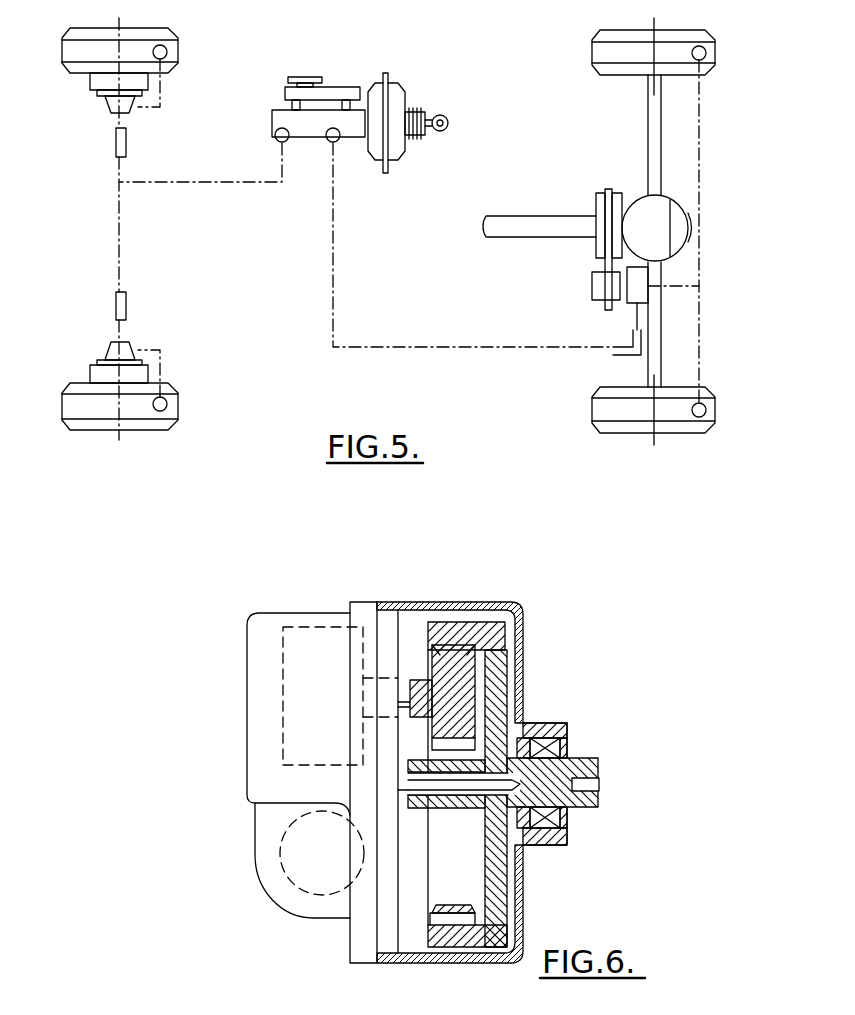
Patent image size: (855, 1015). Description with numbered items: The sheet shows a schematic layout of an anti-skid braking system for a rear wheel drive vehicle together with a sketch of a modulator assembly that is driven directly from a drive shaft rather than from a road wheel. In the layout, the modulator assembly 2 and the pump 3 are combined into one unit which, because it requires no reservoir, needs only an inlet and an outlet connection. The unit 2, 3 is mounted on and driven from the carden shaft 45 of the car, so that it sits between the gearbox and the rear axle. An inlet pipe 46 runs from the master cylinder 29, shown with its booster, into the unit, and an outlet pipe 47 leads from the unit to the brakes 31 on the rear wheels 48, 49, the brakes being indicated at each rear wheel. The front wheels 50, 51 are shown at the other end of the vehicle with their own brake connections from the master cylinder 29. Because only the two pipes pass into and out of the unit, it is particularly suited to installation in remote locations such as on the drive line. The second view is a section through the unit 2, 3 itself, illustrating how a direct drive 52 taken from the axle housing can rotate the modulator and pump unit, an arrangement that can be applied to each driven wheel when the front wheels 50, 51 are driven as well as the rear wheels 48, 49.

In FIG. 5, the modulator assembly 2 is at (367, 229).
In FIG. 6, the modulator assembly 2 is at (371, 782).
In FIG. 5, the pump 3 is at (110, 107).
In FIG. 6, the pump 3 is at (288, 775).
In FIG. 5, the master cylinder 29 is at (312, 120).
In FIG. 5, the brake 31 is at (703, 58).
In FIG. 5, the carden shaft 45 is at (522, 228).
In FIG. 5, the inlet pipe 46 is at (438, 350).
In FIG. 5, the outlet pipe 47 is at (699, 340).
In FIG. 5, the rear wheel 48 is at (612, 51).
In FIG. 5, the rear wheel 49 is at (627, 408).
In FIG. 5, the front wheel 50 is at (87, 50).
In FIG. 5, the front wheel 51 is at (102, 403).
In FIG. 6, the direct drive 52 is at (452, 690).